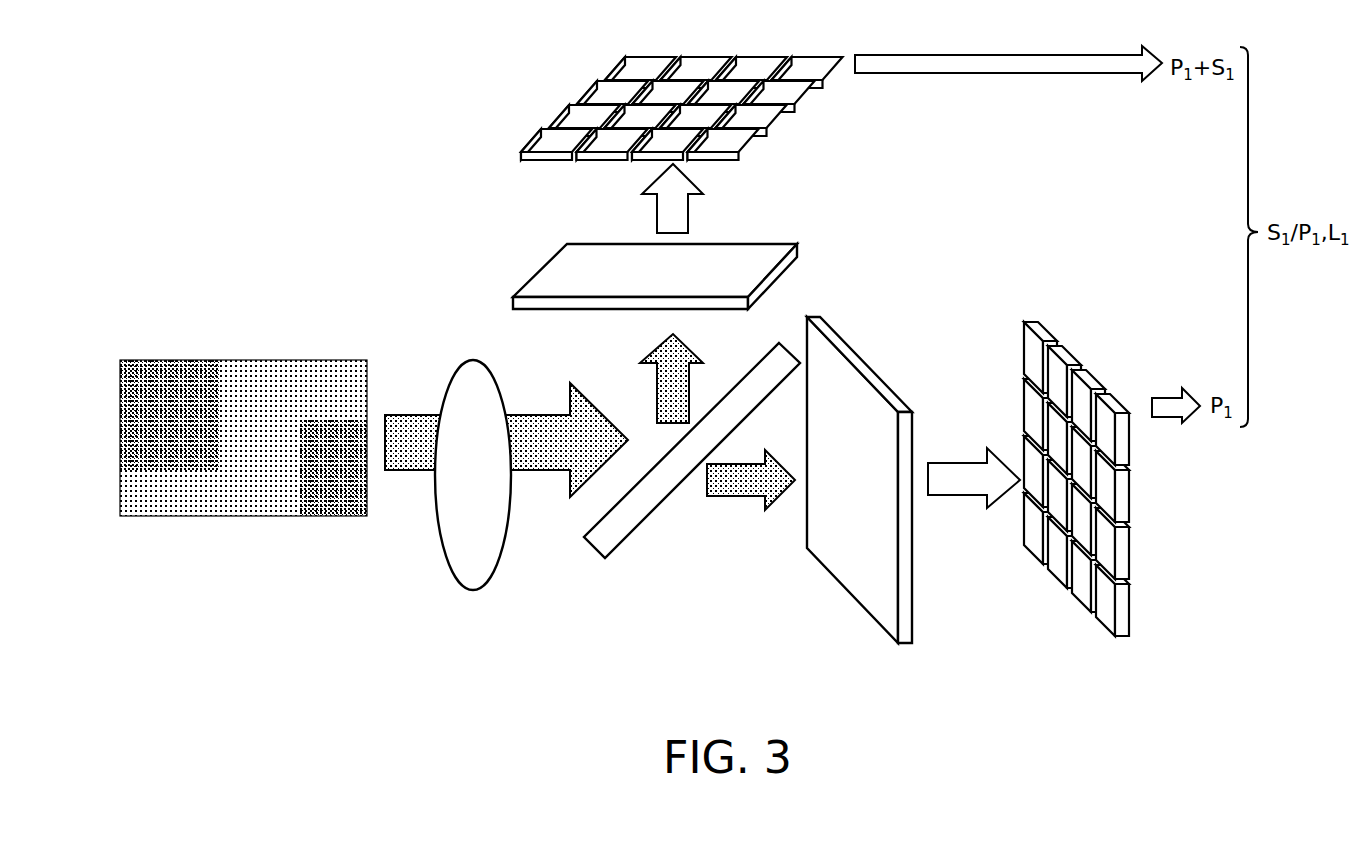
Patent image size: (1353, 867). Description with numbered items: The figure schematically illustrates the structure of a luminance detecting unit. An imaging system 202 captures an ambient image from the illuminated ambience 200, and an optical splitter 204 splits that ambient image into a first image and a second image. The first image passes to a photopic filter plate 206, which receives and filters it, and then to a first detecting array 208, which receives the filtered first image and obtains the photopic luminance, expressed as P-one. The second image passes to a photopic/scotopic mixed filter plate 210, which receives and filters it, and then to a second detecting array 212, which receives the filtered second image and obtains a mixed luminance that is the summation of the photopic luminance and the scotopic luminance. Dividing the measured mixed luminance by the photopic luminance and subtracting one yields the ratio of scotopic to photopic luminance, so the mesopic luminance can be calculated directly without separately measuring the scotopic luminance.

The illuminated ambience 200 is at (313, 378).
The imaging system 202 is at (495, 555).
The optical splitter 204 is at (638, 513).
The photopic filter plate 206 is at (912, 610).
The first detecting array 208 is at (1132, 620).
The photopic/scotopic mixed filter plate 210 is at (797, 250).
The second detecting array 212 is at (737, 148).